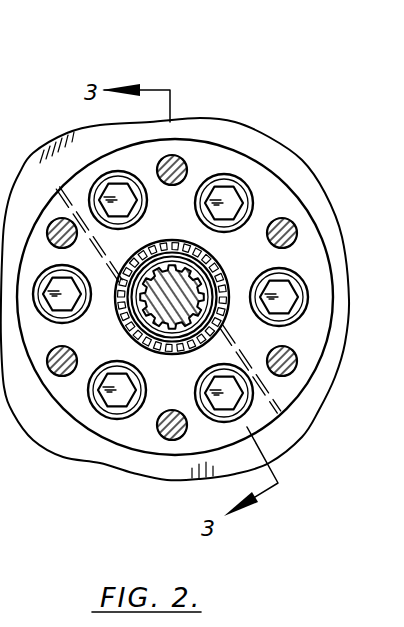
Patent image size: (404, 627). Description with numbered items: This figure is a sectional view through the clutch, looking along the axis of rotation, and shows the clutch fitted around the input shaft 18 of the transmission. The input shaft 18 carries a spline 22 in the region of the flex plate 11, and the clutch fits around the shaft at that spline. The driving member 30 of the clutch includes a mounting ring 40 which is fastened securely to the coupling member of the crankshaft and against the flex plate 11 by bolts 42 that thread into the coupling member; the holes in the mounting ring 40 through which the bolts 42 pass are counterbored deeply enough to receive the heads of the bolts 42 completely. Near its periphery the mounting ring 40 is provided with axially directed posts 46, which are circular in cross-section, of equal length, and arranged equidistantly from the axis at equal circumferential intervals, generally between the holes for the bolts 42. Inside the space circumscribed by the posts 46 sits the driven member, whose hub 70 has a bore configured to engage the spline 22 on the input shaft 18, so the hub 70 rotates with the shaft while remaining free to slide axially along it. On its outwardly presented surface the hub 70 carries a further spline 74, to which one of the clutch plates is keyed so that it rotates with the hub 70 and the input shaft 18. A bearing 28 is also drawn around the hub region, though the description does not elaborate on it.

The flex plate 11 is at (100, 461).
The input shaft 18 is at (171, 270).
The spline 22 is at (212, 268).
The bearing 28 is at (127, 328).
The driving member 30 is at (298, 411).
The mounting ring 40 is at (282, 197).
The bolts 42 is at (240, 180).
The posts 46 is at (181, 157).
The hub 70 is at (169, 334).
The spline 74 is at (115, 301).